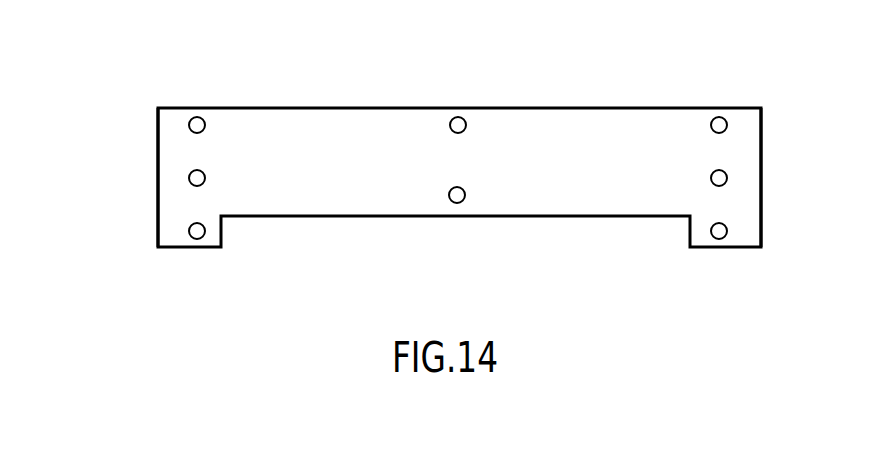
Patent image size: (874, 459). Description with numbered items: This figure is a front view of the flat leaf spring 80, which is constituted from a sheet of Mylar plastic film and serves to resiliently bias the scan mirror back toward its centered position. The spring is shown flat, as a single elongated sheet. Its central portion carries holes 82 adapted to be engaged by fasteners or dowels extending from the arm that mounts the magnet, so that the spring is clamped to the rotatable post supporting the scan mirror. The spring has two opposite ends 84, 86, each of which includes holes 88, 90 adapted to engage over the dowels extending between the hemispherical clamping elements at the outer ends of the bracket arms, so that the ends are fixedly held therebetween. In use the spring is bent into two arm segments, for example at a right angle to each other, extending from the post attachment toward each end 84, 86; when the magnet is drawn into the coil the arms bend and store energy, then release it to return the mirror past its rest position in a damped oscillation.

The flat leaf spring 80 is at (344, 108).
The holes 82 is at (466, 118).
The opposite end 84 is at (158, 163).
The opposite end 86 is at (762, 166).
The holes 88 is at (203, 118).
The holes 90 is at (730, 120).